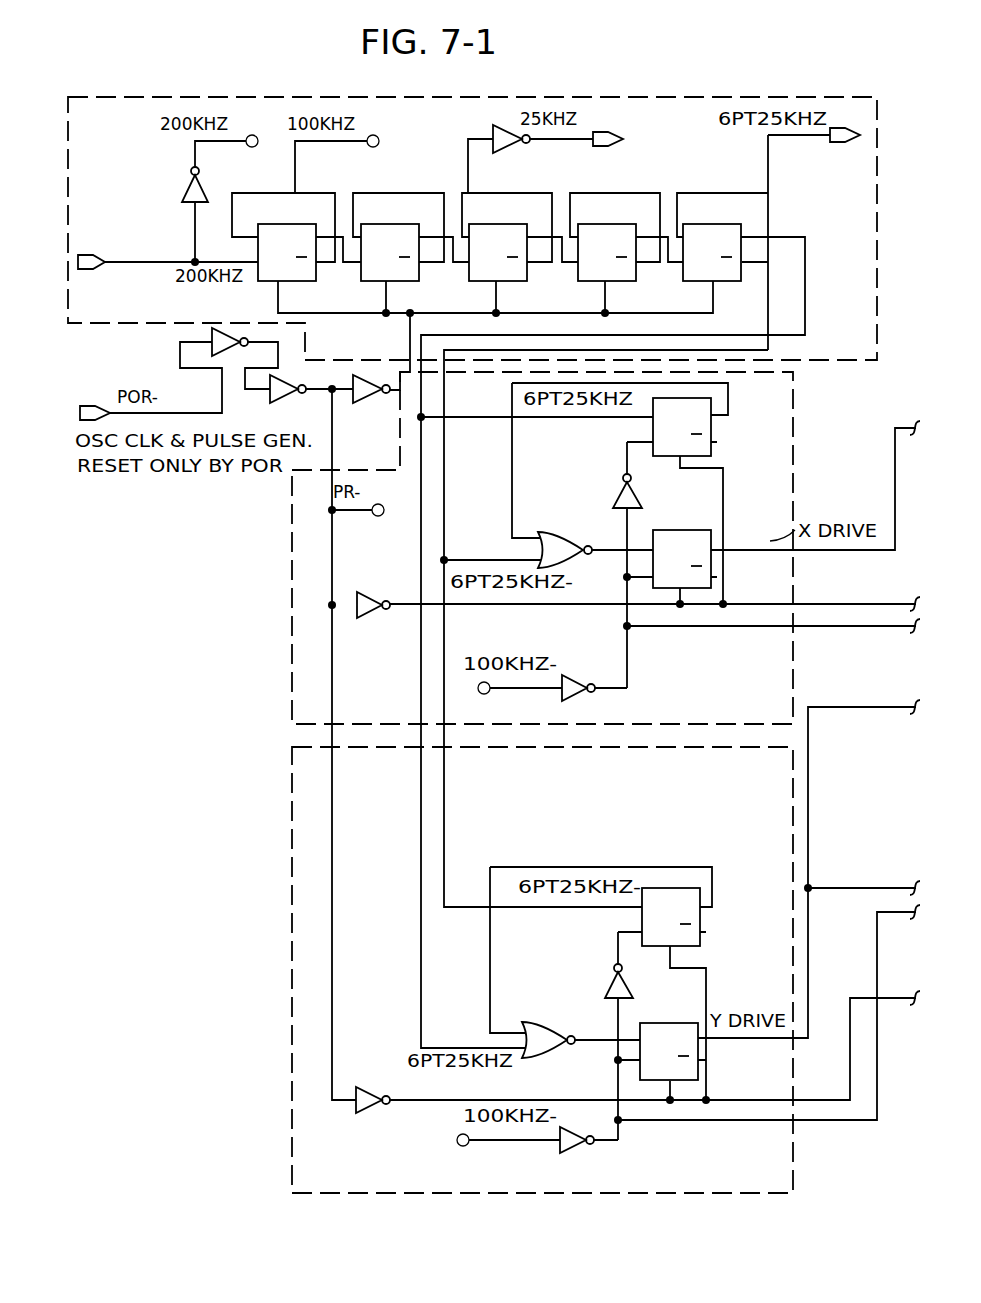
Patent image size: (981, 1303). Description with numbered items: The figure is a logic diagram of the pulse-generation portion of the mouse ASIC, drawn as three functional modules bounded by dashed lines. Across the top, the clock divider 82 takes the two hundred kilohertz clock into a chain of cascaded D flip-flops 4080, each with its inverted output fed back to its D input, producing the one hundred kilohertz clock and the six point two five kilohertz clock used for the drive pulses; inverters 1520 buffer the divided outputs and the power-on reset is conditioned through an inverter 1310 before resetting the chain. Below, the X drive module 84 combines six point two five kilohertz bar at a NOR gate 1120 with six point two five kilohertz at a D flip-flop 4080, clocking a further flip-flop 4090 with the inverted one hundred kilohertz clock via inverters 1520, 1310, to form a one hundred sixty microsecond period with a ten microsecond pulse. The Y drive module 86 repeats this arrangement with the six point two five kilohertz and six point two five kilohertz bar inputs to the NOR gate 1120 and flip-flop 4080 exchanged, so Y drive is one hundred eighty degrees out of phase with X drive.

The clock divider 82 is at (773, 96).
The X drive module 84 is at (292, 662).
The Y drive module 86 is at (292, 1003).
The D-type flip-flop 4080 is at (812, 297).
The D-type flip-flop with clock enable 4090 is at (675, 792).
The inverter 1520 is at (380, 647).
The inverter 1310 is at (228, 354).
The NOR gate 1120 is at (561, 790).